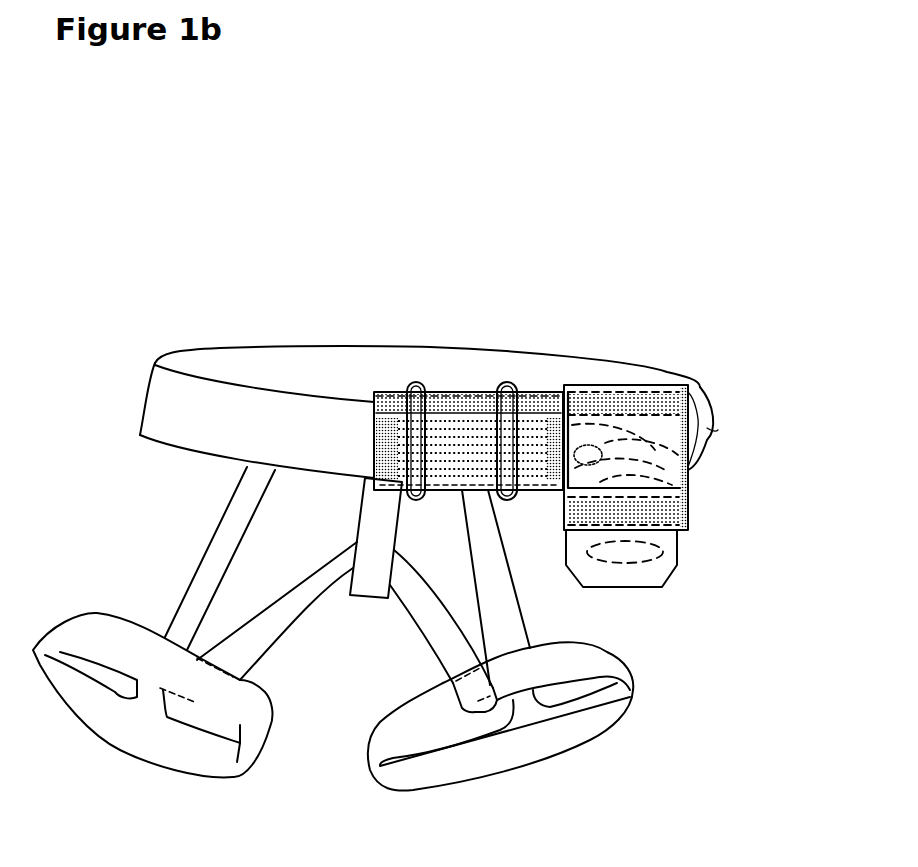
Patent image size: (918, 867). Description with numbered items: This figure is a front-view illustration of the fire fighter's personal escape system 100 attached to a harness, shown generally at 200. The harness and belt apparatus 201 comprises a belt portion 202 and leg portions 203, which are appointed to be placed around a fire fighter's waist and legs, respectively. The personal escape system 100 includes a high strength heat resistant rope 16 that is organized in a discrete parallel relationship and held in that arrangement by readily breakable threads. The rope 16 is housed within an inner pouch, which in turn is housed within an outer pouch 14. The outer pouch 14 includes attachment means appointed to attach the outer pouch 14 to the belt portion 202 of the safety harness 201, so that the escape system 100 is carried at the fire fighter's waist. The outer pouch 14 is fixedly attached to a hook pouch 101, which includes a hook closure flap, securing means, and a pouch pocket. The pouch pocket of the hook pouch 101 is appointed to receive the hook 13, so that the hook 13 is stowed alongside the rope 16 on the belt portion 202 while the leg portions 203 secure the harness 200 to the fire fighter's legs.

The harness 200 is at (303, 130).
The harness and belt apparatus 201 is at (296, 349).
The belt portion 202 is at (140, 403).
The leg portions 203 is at (607, 660).
The high strength heat resistant rope 16 is at (448, 423).
The fire fighter's personal escape system 100 is at (471, 393).
The outer pouch 14 is at (533, 396).
The hook pouch 101 is at (630, 384).
The hook 13 is at (653, 542).